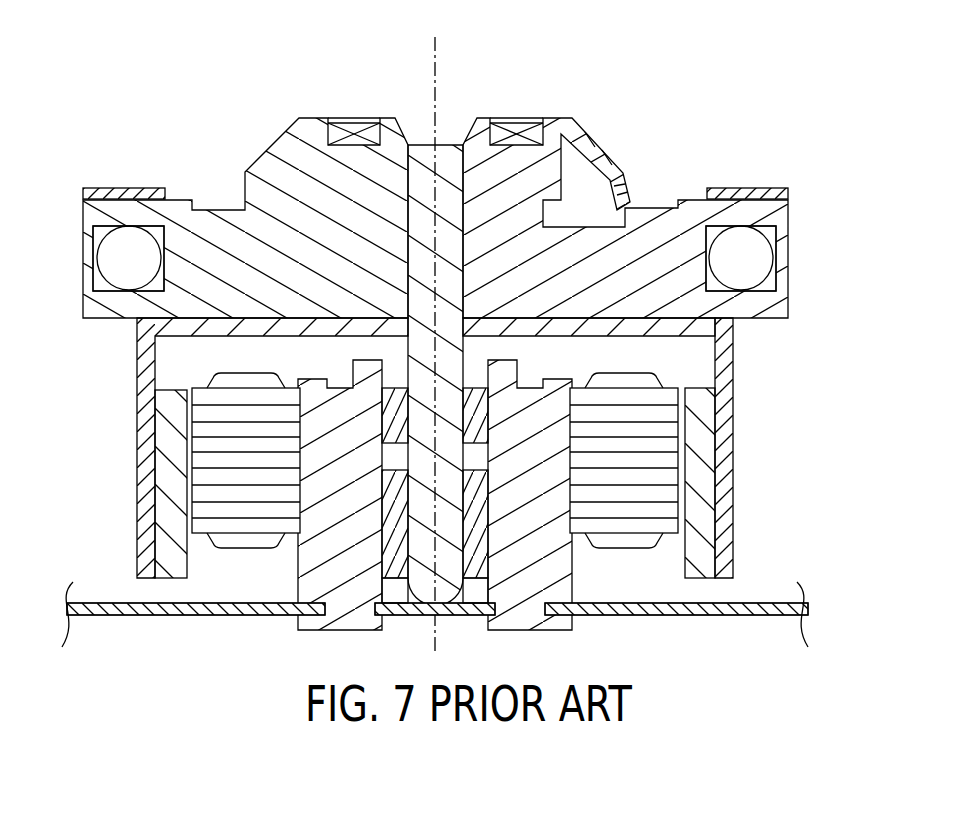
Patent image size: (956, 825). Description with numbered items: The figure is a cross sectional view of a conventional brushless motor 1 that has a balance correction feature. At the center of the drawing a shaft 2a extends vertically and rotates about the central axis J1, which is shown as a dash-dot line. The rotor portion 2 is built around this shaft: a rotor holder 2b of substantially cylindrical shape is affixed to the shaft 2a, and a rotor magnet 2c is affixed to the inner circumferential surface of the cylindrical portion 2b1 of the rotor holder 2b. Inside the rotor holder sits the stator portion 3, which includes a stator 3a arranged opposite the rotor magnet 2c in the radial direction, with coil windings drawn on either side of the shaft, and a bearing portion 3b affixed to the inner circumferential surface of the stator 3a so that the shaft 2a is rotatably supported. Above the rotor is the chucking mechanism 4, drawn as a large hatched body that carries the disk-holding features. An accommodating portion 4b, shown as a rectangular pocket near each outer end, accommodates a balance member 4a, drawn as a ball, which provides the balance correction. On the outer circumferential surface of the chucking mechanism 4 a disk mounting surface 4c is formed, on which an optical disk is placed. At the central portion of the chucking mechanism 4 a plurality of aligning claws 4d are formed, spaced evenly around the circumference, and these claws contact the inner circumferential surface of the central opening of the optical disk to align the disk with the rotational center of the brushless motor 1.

The brushless motor 1 is at (112, 97).
The rotor portion 2 is at (745, 437).
The shaft 2a is at (422, 163).
The rotor holder 2b is at (137, 360).
The cylindrical portion 2b1 is at (148, 423).
The rotor magnet 2c is at (172, 518).
The stator portion 3 is at (593, 578).
The stator 3a is at (632, 542).
The bearing portion 3b is at (477, 385).
The chucking mechanism 4 is at (230, 183).
The balance member 4a is at (750, 252).
The accommodating portion 4b is at (708, 233).
The disk mounting surface 4c is at (750, 228).
The aligning claws 4d is at (618, 163).
The central axis J1 is at (442, 77).